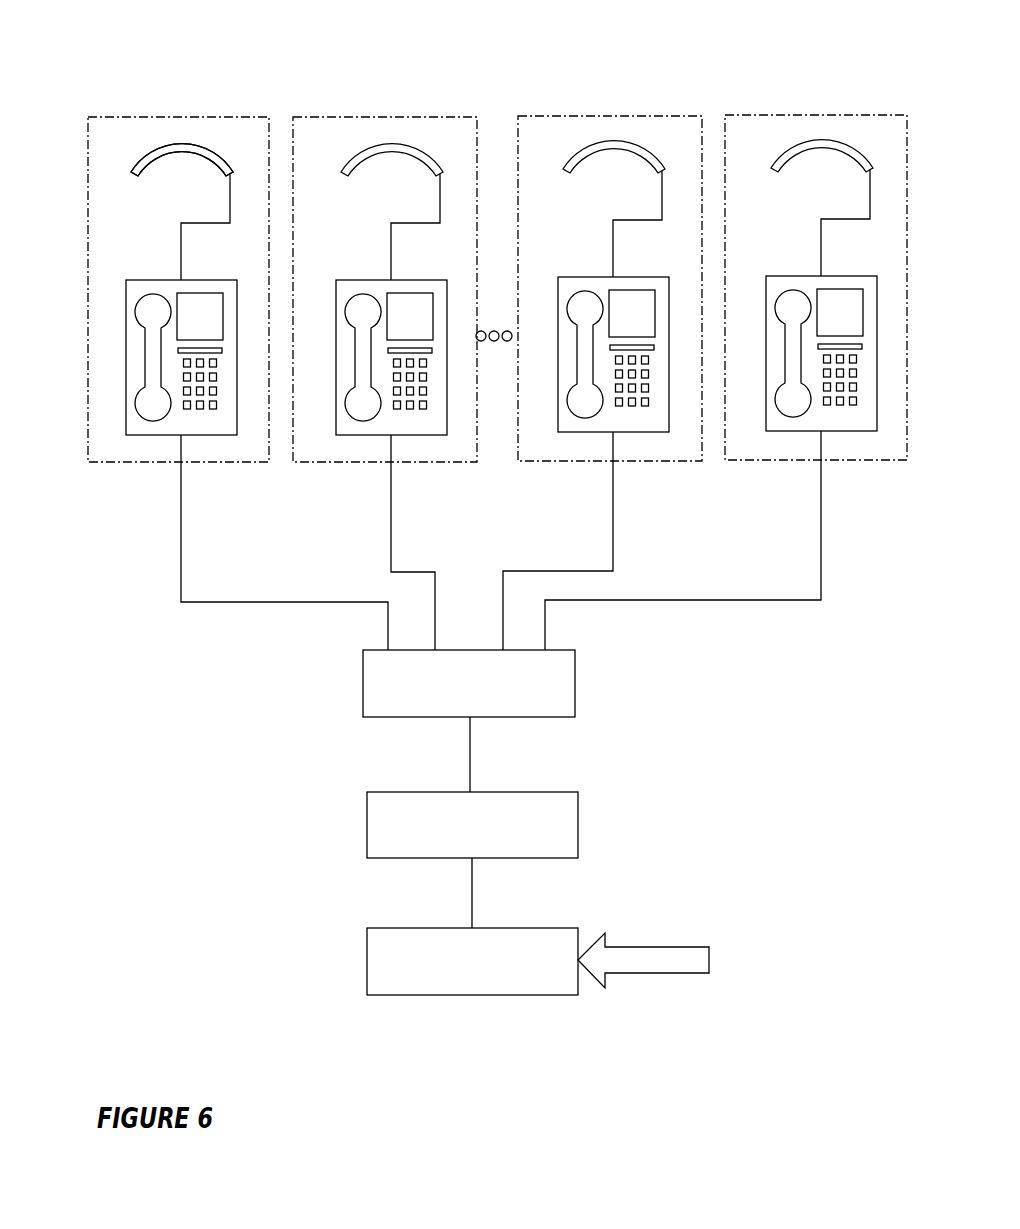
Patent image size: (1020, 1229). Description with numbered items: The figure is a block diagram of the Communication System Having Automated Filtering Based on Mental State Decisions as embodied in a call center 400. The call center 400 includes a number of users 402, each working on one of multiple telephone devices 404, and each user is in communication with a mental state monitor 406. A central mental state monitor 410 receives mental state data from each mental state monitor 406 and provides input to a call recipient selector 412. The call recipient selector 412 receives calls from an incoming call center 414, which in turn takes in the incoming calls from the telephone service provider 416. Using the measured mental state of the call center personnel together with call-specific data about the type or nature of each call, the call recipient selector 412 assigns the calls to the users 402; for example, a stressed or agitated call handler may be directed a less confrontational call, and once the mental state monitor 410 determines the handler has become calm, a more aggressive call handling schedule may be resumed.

The call center 400 is at (707, 72).
The users 402 is at (172, 118).
The telephone devices 404 is at (126, 380).
The mental state monitor 406 is at (134, 172).
The mental state monitor 410 is at (575, 680).
The call recipient selector 412 is at (367, 830).
The incoming call center 414 is at (367, 966).
The incoming calls from telephone service provider 416 is at (700, 947).